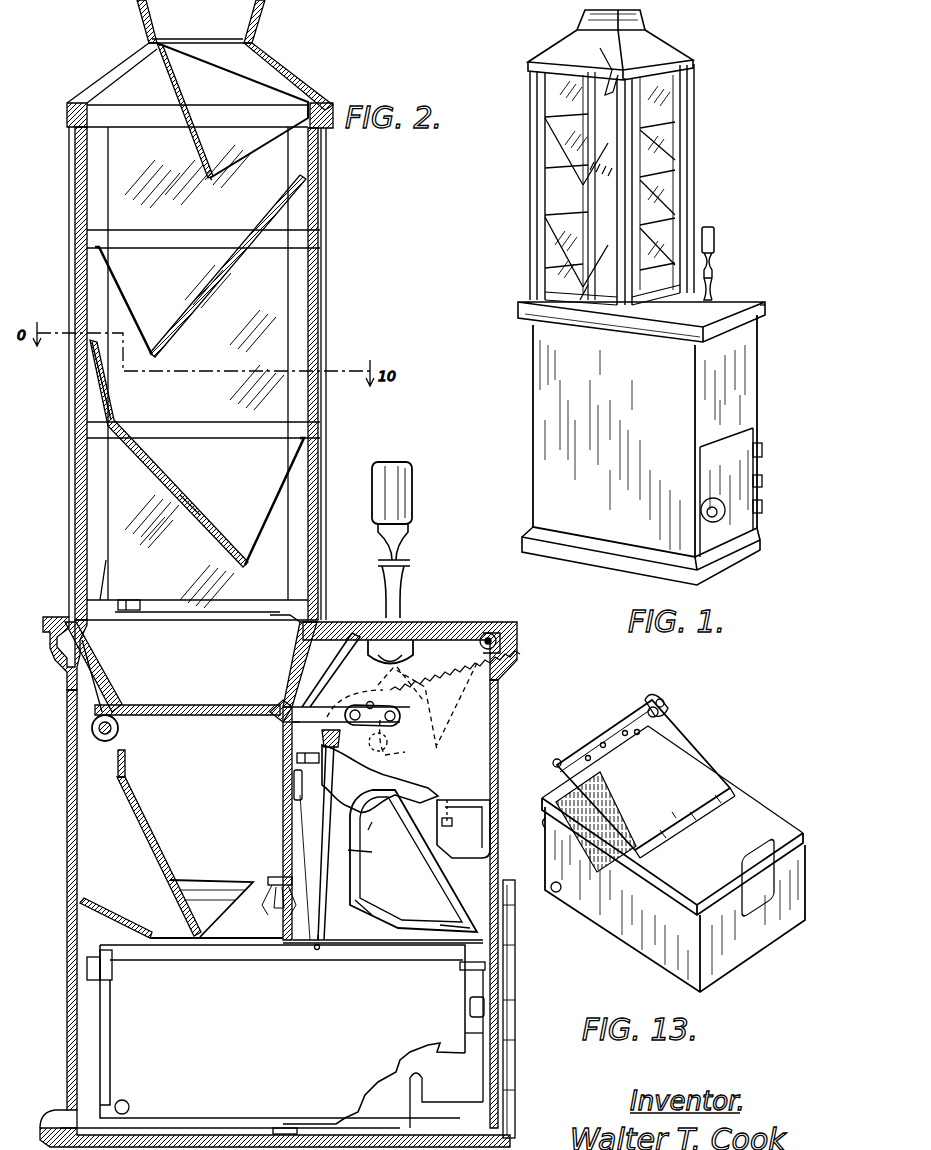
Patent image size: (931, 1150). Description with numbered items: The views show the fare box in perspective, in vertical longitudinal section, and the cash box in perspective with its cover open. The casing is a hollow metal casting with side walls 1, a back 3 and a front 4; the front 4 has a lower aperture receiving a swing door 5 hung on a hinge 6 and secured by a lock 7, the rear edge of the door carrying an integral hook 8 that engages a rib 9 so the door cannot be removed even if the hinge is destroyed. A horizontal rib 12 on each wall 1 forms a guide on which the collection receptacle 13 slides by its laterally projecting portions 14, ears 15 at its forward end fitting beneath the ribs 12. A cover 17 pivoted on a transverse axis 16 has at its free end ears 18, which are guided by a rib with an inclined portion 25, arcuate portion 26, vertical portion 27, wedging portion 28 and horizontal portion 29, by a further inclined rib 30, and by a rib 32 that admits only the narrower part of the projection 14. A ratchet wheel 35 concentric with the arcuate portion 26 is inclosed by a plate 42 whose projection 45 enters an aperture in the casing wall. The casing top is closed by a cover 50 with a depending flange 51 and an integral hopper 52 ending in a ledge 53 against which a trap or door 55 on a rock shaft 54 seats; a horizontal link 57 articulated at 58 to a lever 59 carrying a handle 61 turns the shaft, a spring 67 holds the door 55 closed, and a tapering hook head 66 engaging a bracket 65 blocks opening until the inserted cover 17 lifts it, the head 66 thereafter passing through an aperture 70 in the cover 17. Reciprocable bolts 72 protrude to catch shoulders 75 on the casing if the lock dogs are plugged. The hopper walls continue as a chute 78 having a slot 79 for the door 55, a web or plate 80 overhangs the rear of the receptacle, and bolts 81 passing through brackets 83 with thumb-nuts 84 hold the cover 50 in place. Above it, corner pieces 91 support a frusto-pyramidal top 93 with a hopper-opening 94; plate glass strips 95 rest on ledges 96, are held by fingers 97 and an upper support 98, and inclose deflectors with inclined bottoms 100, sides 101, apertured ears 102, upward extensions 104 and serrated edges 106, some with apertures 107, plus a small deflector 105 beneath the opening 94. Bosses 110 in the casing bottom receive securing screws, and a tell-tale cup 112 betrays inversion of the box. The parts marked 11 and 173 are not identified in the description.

In FIG. 1, the walls 1 is at (641, 450).
In FIG. 2, the back 3 is at (68, 830).
In FIG. 1, the front 4 is at (725, 385).
In FIG. 2, the swing door 5 is at (490, 1072).
In FIG. 1, the swing door 5 is at (726, 492).
In FIG. 2, the hinge 6 is at (505, 968).
In FIG. 1, the hinge 6 is at (762, 473).
In FIG. 1, the lock 7 is at (716, 518).
In FIG. 2, the hook 8 is at (468, 1003).
In FIG. 2, the rib 9 is at (480, 1034).
In FIG. 2, the operating rod 11 is at (312, 897).
In FIG. 2, the horizontal rib 12 is at (462, 970).
In FIG. 2, the cash box 13 is at (262, 1036).
In FIG. 13, the cash box 13 is at (652, 940).
In FIG. 2, the laterally projecting portion 14 is at (250, 958).
In FIG. 13, the laterally projecting portion 14 is at (668, 880).
In FIG. 2, the ear 15 is at (108, 975).
In FIG. 13, the ear 15 is at (543, 823).
In FIG. 2, the transverse axis 16 is at (322, 948).
In FIG. 13, the transverse axis 16 is at (637, 848).
In FIG. 2, the cover 17 is at (315, 948).
In FIG. 13, the cover 17 is at (646, 779).
In FIG. 13, the ear 18 is at (560, 758).
In FIG. 2, the inclined portion 25 is at (418, 862).
In FIG. 2, the arcuate portion 26 is at (373, 828).
In FIG. 2, the vertical portion 27 is at (362, 849).
In FIG. 2, the wedging portion 28 is at (380, 898).
In FIG. 2, the horizontal portion 29 is at (440, 930).
In FIG. 2, the rib 30 is at (447, 846).
In FIG. 2, the rib 32 is at (225, 930).
In FIG. 2, the ratchet wheel 35 is at (412, 786).
In FIG. 2, the plate 42 is at (328, 695).
In FIG. 2, the projection 45 is at (452, 820).
In FIG. 2, the cover 50 is at (443, 623).
In FIG. 1, the cover 50 is at (641, 322).
In FIG. 2, the marginal lip or flange 51 is at (45, 640).
In FIG. 1, the marginal lip or flange 51 is at (767, 312).
In FIG. 2, the hopper 52 is at (103, 686).
In FIG. 1, the hopper 52 is at (585, 300).
In FIG. 2, the ledge 53 is at (283, 724).
In FIG. 2, the rock shaft 54 is at (104, 742).
In FIG. 2, the trap or door 55 is at (215, 698).
In FIG. 2, the horizontal link 57 is at (310, 712).
In FIG. 2, the articulation 58 is at (392, 720).
In FIG. 2, the lever 59 is at (400, 676).
In FIG. 2, the handle 61 is at (414, 510).
In FIG. 1, the handle 61 is at (716, 245).
In FIG. 2, the bracket 65 is at (292, 790).
In FIG. 2, the tapering head 66 is at (293, 757).
In FIG. 2, the spring 67 is at (455, 684).
In FIG. 13, the aperture 70 is at (652, 698).
In FIG. 2, the bolt 72 is at (128, 1103).
In FIG. 13, the bolt 72 is at (553, 893).
In FIG. 2, the shoulders 75 is at (412, 1102).
In FIG. 2, the chute 78 is at (142, 822).
In FIG. 2, the slot 79 is at (123, 746).
In FIG. 2, the web or plate 80 is at (116, 915).
In FIG. 2, the bolts 81 is at (270, 878).
In FIG. 2, the brackets 83 is at (211, 908).
In FIG. 2, the thumb-nuts 84 is at (274, 910).
In FIG. 1, the corner piece 91 is at (530, 180).
In FIG. 2, the frusto-pyramidal top 93 is at (285, 92).
In FIG. 1, the frusto-pyramidal top 93 is at (665, 58).
In FIG. 2, the hopper-opening 94 is at (201, 21).
In FIG. 1, the hopper-opening 94 is at (578, 20).
In FIG. 2, the plate glass strips 95 is at (318, 312).
In FIG. 2, the ledges 96 is at (92, 636).
In FIG. 2, the fingers 97 is at (290, 625).
In FIG. 2, the rectangular metallic support 98 is at (92, 106).
In FIG. 2, the inclined bottom 100 is at (232, 290).
In FIG. 1, the inclined bottom 100 is at (655, 135).
In FIG. 2, the sides 101 is at (199, 406).
In FIG. 2, the apertured ears 102 is at (316, 238).
In FIG. 2, the upward extension 104 is at (103, 382).
In FIG. 2, the small deflector 105 is at (232, 110).
In FIG. 1, the small deflector 105 is at (612, 70).
In FIG. 2, the serrated lower edge 106 is at (211, 176).
In FIG. 1, the serrated lower edge 106 is at (595, 180).
In FIG. 2, the apertures 107 is at (188, 510).
In FIG. 1, the apertures 107 is at (558, 127).
In FIG. 2, the bosses 110 is at (278, 1128).
In FIG. 2, the metallic cup 112 is at (142, 604).
In FIG. 2, the switch arm 173 is at (106, 585).